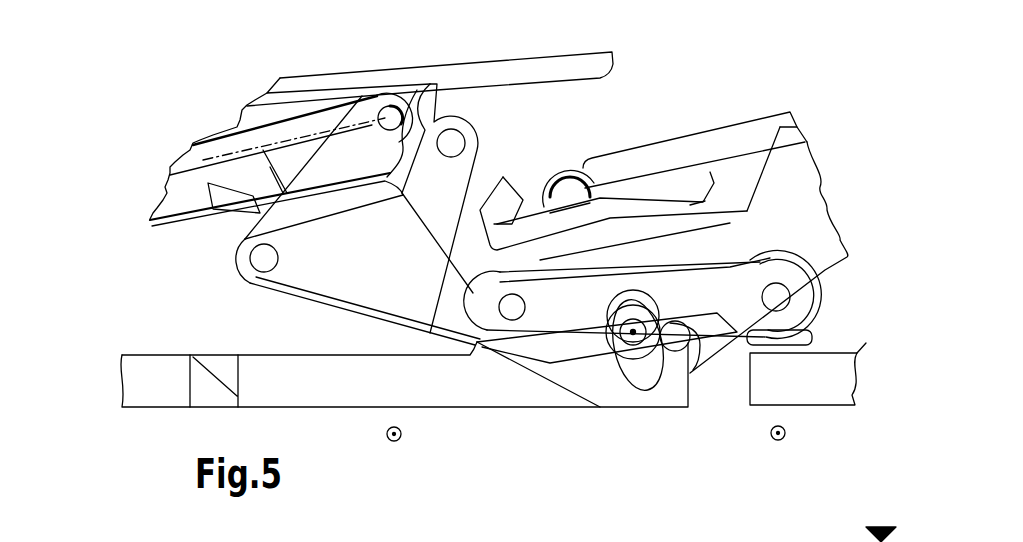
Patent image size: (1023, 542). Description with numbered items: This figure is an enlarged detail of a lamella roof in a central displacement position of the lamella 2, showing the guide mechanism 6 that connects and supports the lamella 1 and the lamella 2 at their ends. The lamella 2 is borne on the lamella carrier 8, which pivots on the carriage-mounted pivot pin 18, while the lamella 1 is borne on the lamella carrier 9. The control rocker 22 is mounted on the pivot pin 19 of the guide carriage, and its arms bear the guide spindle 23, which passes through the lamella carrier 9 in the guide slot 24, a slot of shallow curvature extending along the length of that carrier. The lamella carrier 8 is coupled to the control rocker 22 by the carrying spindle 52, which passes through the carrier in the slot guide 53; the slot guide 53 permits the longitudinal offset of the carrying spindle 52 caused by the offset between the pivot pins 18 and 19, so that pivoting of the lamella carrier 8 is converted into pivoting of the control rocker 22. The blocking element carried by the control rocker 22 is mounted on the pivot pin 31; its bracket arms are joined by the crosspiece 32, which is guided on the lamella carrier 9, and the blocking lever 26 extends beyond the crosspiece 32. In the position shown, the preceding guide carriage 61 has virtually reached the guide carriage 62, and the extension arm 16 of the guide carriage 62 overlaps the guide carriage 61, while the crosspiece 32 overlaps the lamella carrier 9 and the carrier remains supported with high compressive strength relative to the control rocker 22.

The lamella 1 is at (530, 67).
The lamella 2 is at (757, 133).
The guide mechanism 6 is at (603, 440).
The lamella carrier 8 is at (803, 200).
The lamella carrier 9 is at (237, 130).
The extension arm 16 is at (160, 393).
The pivot pin 18 is at (520, 305).
The pivot pin 19 is at (790, 287).
The control rocker 22 is at (430, 78).
The guide spindle 23 is at (385, 107).
The guide slot 24 is at (190, 153).
The blocking lever 26 is at (817, 334).
The pivot pin 31 is at (262, 258).
The crosspiece 32 is at (452, 143).
The carrying spindle 52 is at (635, 336).
The slot guide 53 is at (696, 368).
The guide carriage 61 is at (472, 392).
The guide carriage 62 is at (866, 343).